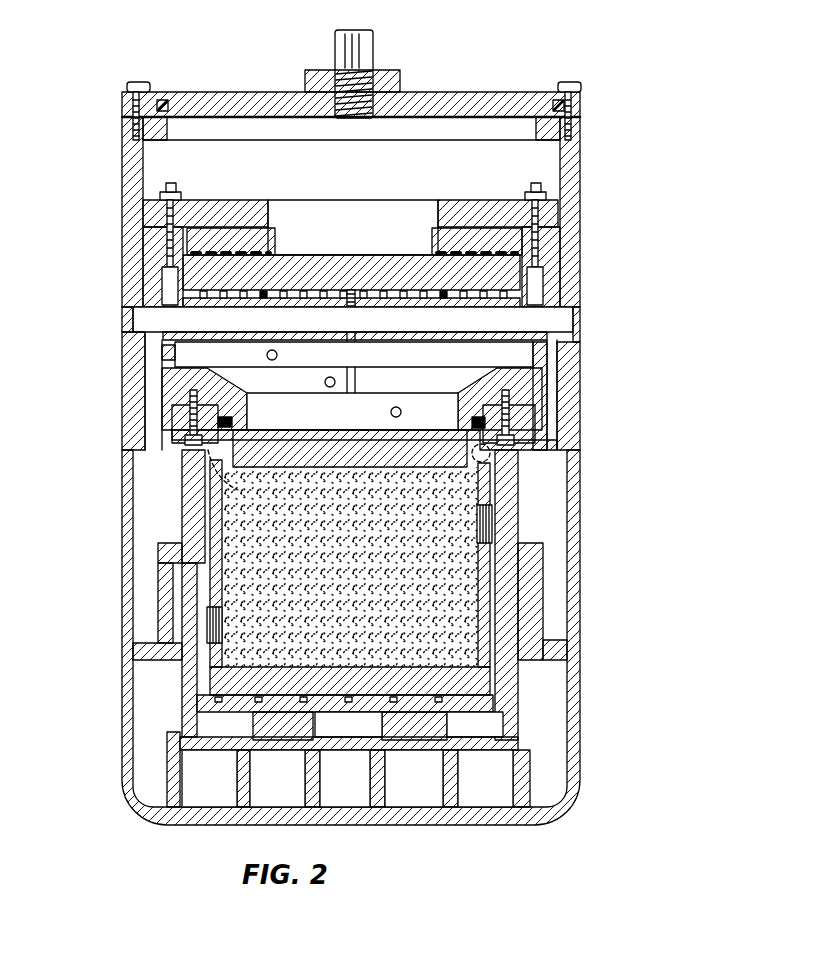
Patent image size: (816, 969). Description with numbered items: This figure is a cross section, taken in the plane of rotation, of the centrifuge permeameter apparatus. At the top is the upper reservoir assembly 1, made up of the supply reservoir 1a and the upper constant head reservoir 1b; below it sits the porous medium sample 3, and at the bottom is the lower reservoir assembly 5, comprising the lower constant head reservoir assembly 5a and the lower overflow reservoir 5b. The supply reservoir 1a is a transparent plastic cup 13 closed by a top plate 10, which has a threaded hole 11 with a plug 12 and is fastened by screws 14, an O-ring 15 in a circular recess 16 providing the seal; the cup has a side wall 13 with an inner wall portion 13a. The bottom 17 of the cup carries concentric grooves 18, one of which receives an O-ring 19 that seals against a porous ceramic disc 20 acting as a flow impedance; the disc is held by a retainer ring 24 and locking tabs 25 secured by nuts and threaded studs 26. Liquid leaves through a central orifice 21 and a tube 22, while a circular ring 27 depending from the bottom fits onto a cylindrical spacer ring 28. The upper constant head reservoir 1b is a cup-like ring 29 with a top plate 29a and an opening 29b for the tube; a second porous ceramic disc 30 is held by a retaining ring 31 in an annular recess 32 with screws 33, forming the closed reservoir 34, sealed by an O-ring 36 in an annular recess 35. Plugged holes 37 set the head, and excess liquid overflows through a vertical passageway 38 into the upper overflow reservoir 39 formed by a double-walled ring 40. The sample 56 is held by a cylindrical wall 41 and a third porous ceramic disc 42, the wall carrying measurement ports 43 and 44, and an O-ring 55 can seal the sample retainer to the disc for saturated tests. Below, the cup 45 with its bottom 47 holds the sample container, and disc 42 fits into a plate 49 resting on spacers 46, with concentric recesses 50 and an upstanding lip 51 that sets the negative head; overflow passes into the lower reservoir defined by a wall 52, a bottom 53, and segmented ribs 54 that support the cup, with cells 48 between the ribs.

The upper reservoir assembly 1 is at (600, 88).
The supply reservoir 1a is at (100, 90).
The upper constant head reservoir 1b is at (100, 340).
The porous medium sample 3 is at (612, 448).
The lower reservoir assembly 5 is at (662, 450).
The lower constant head reservoir assembly 5a is at (78, 450).
The lower overflow reservoir 5b is at (100, 660).
The top plate 10 is at (462, 92).
The threaded hole 11 is at (378, 95).
The plug 12 is at (376, 47).
The cup 13 is at (578, 178).
The inner wall portion 13a is at (570, 200).
The screws 14 is at (143, 83).
The O-ring 15 is at (553, 100).
The circular recess 16 is at (168, 101).
The bottom 17 is at (500, 316).
The concentric grooves 18 is at (351, 272).
The O-ring 19 is at (263, 293).
The porous ceramic disc 20 is at (417, 250).
The orifice 21 is at (356, 293).
The tube 22 is at (362, 354).
The retainer ring 24 is at (277, 245).
The locking tabs 25 is at (250, 200).
The bolt 26 is at (174, 186).
The circular ring 27 is at (582, 336).
The cylindrical spacer ring 28 is at (577, 409).
The cup-like ring 29 is at (560, 386).
The top plate 29a is at (436, 334).
The opening 29b is at (347, 340).
The second porous ceramic disc 30 is at (440, 432).
The retaining ring 31 is at (527, 460).
The annular recess 32 is at (480, 395).
The screws 33 is at (190, 396).
The upper constant head reservoir 34 is at (322, 417).
The annular recess 35 is at (222, 370).
The O-ring 36 is at (236, 420).
The holes 37 is at (176, 357).
The vertical passageway 38 is at (133, 316).
The upper overflow reservoir 39 is at (164, 499).
The double-walled circular ring 40 is at (124, 526).
The cylindrical wall 41 is at (480, 600).
The third porous ceramic disc 42 is at (480, 680).
The measurement port 43 is at (492, 522).
The measurement port 44 is at (207, 612).
The cylindrical cup 45 is at (512, 640).
The spacers 46 is at (445, 730).
The bottom 47 is at (356, 741).
The cell 48 is at (207, 746).
The plate 49 is at (407, 715).
The concentric recesses 50 is at (290, 742).
The upstanding lip 51 is at (496, 702).
The vertical cylindrical wall 52 is at (133, 710).
The bottom 53 is at (384, 820).
The segmented ribs 54 is at (318, 774).
The O-ring 55 is at (349, 473).
The sample 56 is at (354, 579).